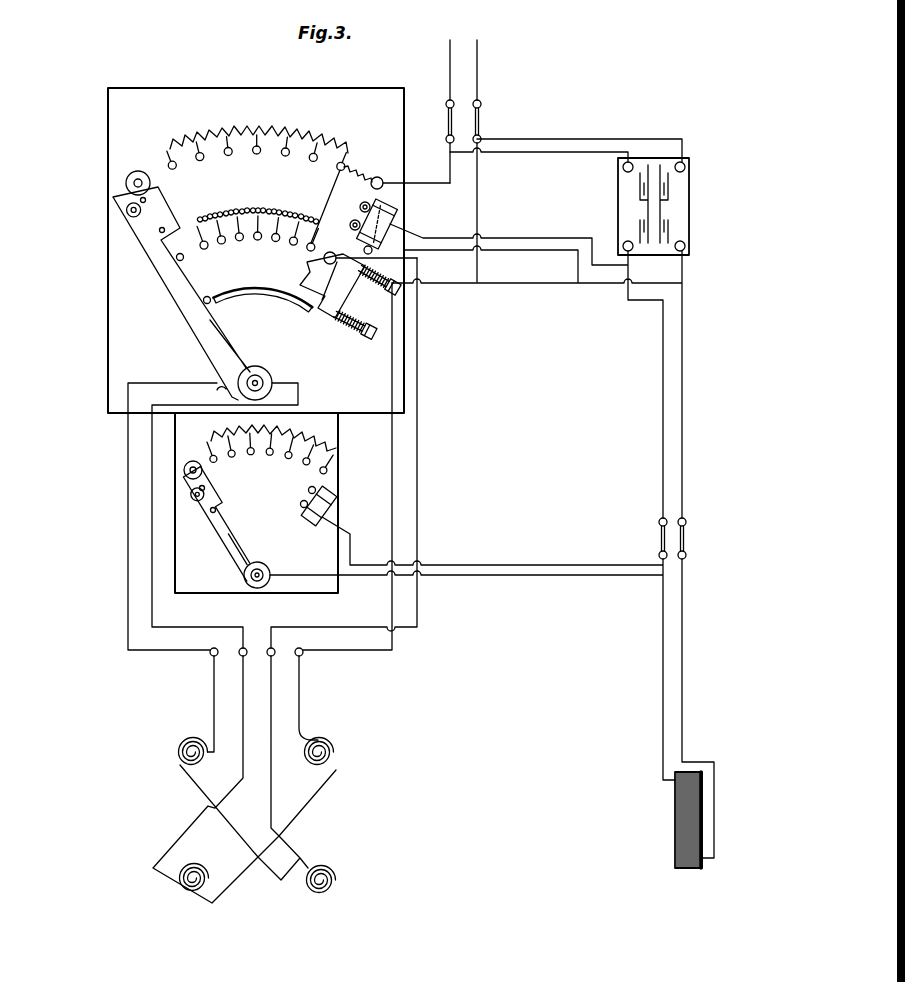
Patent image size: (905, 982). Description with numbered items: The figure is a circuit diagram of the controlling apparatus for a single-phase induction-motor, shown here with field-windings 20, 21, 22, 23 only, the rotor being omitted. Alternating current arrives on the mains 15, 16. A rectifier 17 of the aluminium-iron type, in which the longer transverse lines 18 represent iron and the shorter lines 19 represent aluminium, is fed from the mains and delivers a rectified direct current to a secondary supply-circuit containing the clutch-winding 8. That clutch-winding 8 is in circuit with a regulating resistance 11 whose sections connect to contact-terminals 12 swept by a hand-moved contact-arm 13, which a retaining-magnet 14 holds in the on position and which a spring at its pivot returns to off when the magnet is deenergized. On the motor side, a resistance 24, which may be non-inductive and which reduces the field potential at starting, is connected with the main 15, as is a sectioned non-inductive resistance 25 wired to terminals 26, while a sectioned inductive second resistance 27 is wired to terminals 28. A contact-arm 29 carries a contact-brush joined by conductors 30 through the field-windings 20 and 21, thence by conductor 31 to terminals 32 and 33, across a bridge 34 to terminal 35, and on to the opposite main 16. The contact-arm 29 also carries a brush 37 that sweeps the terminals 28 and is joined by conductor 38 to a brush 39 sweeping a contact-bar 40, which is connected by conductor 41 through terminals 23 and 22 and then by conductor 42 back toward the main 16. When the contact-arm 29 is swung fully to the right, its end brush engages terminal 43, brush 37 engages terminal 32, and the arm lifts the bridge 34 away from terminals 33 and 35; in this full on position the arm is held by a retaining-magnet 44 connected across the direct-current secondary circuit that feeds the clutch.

The clutch-winding 8 is at (680, 837).
The regulating resistance 11 is at (296, 438).
The contact-terminals 12 is at (289, 459).
The contact-arm 13 is at (226, 526).
The retaining-magnet 14 is at (334, 497).
The alternating-current main 15 is at (450, 64).
The alternating-current main 16 is at (477, 64).
The rectifier 17 is at (692, 224).
The longer transverse lines 18 is at (633, 172).
The shorter lines 19 is at (647, 178).
The field-winding 20 is at (177, 752).
The field-winding 21 is at (336, 882).
The terminal 22 is at (334, 738).
The terminal 23 is at (185, 893).
The resistance 24 is at (362, 174).
The resistance 25 is at (288, 126).
The terminals 26 is at (257, 155).
The second resistance 27 is at (268, 210).
The terminals 28 is at (240, 240).
The contact-arm 29 is at (223, 336).
The conductors 30 is at (148, 256).
The conductor 31 is at (418, 497).
The terminal 32 is at (326, 241).
The terminal 33 is at (327, 318).
The bridge 34 is at (350, 286).
The terminal 35 is at (339, 251).
The brush 37 is at (178, 259).
The conductor 38 is at (197, 282).
The brush 39 is at (205, 302).
The contact-bar 40 is at (223, 287).
The conductor 41 is at (299, 378).
The conductor 42 is at (391, 447).
The terminal 43 is at (383, 181).
The retaining-magnet 44 is at (380, 229).